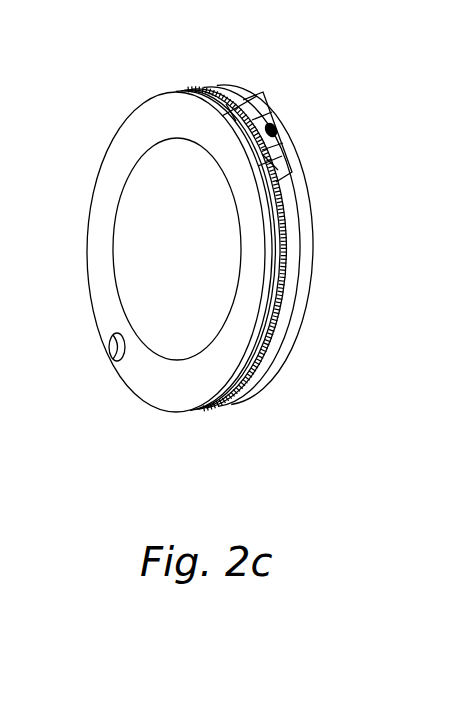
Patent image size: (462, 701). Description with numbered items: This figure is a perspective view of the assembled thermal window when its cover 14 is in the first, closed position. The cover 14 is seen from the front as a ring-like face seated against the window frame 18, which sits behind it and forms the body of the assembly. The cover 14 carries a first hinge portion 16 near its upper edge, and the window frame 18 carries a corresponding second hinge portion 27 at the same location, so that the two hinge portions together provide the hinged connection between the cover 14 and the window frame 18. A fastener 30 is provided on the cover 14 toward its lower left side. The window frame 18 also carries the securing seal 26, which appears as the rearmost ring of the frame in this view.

The cover 14 is at (218, 368).
The first hinge portion 16 is at (232, 98).
The window frame 18 is at (298, 221).
The securing seal 26 is at (325, 300).
The second hinge portion 27 is at (256, 96).
The fastener 30 is at (110, 354).